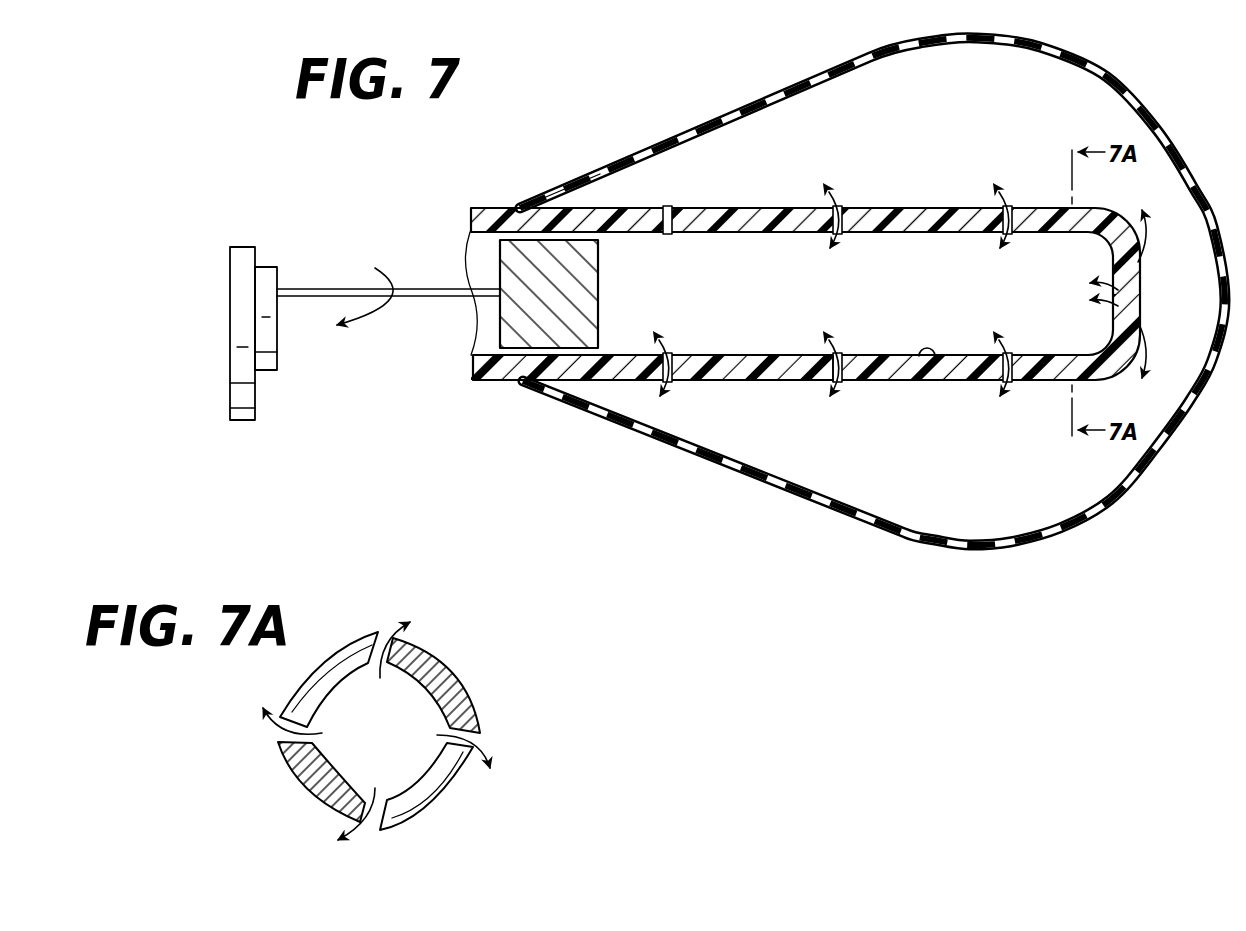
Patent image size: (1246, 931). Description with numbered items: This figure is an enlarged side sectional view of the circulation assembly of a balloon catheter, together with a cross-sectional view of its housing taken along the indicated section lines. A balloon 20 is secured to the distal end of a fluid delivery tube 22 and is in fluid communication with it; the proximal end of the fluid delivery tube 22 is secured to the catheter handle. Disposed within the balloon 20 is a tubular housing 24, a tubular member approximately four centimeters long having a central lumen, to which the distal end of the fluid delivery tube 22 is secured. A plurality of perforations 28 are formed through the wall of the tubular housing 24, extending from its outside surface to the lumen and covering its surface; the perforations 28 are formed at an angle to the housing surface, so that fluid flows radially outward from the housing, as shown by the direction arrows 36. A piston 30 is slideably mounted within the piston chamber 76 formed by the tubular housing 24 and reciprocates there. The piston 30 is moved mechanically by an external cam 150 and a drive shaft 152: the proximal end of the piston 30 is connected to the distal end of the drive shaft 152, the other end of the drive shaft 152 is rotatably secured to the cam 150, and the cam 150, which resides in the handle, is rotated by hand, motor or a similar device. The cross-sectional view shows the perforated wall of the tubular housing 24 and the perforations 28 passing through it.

In FIG. 7, the balloon 20 is at (995, 548).
In FIG. 7, the fluid delivery tube 22 is at (488, 210).
In FIG. 7, the tubular housing 24 is at (760, 222).
In FIG. 7A, the tubular housing 24 is at (438, 686).
In FIG. 7, the perforations 28 is at (840, 218).
In FIG. 7A, the perforations 28 is at (480, 744).
In FIG. 7, the piston 30 is at (588, 302).
In FIG. 7, the direction arrows 36 is at (838, 355).
In FIG. 7, the piston chamber 76 is at (938, 362).
In FIG. 7, the cam 150 is at (258, 246).
In FIG. 7, the drive shaft 152 is at (423, 298).